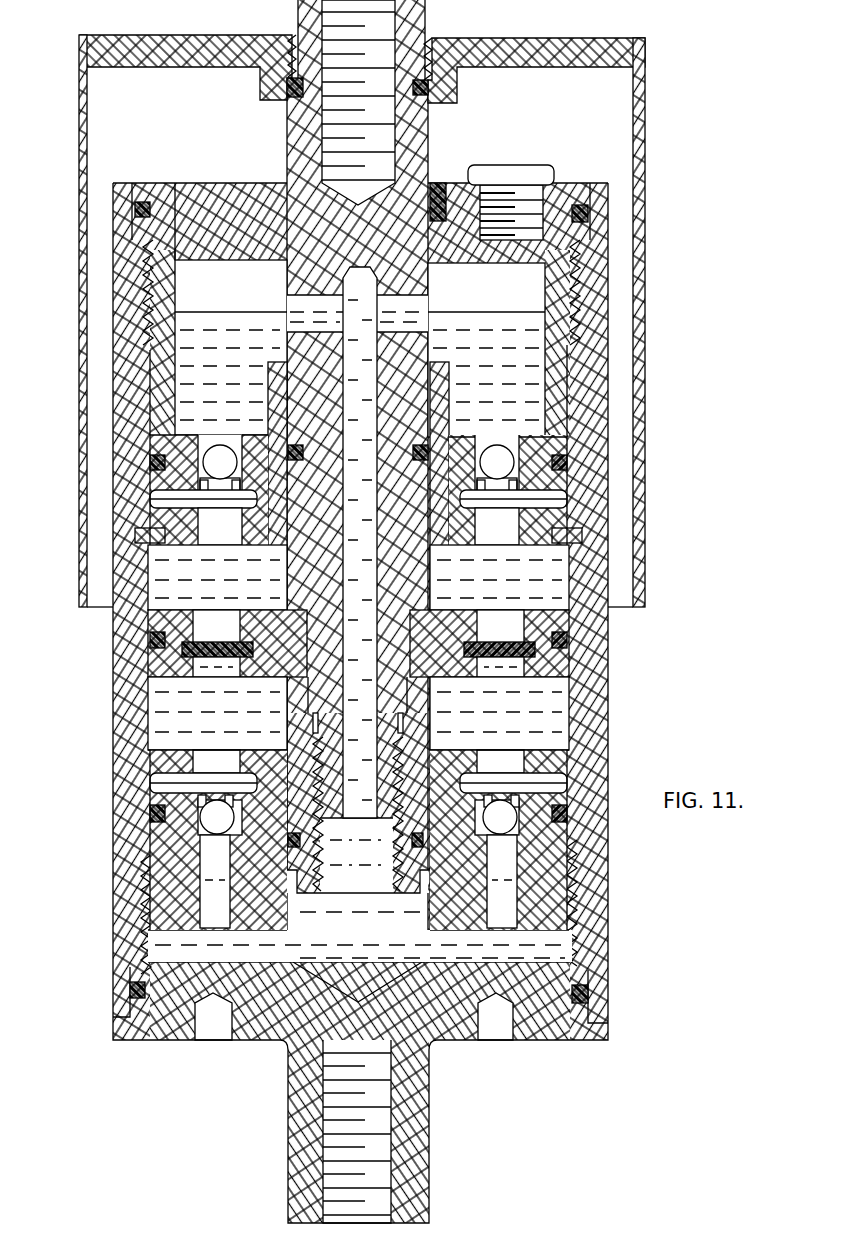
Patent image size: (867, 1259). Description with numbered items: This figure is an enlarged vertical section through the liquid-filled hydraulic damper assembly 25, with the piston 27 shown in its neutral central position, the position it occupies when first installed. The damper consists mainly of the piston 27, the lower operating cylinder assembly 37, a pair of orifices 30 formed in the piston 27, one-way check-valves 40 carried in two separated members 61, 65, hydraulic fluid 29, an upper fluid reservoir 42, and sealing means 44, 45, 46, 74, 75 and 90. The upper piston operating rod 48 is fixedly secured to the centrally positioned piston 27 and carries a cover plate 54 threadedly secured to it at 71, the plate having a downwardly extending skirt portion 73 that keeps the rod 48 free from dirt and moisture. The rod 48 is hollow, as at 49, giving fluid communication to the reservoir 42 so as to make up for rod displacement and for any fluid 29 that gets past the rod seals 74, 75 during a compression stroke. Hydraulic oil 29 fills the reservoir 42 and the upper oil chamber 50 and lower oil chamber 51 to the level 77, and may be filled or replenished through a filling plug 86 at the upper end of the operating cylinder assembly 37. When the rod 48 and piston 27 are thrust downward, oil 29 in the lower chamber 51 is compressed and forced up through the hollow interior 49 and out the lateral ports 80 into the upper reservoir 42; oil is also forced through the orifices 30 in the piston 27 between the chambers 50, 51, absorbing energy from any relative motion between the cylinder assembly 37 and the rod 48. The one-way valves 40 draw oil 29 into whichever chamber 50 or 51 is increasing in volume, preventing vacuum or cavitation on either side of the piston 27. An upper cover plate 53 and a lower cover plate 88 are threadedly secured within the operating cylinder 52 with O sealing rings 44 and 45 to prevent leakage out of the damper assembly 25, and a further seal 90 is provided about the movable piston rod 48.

The damper assembly 25 is at (608, 655).
The piston 27 is at (183, 612).
The hydraulic fluid 29 is at (512, 330).
The orifices 30 is at (222, 660).
The operating cylinder assembly 37 is at (120, 745).
The check-valves 40 is at (220, 452).
The upper fluid reservoir 42 is at (486, 350).
The O sealing ring 44 is at (147, 204).
The O sealing ring 45 is at (130, 990).
The sealing means 46 is at (428, 88).
The piston operating rod 48 is at (412, 285).
The hollow interior 49 is at (362, 316).
The upper oil chamber 50 is at (499, 577).
The lower oil chamber 51 is at (358, 713).
The operating cylinder 52 is at (118, 632).
The upper cover plate 53 is at (212, 182).
The cover plate 54 is at (195, 38).
The check-valve member 61 is at (252, 452).
The check-valve member 65 is at (165, 762).
The threaded connection 71 is at (290, 45).
The skirt portion 73 is at (80, 190).
The rod seal 74 is at (296, 462).
The rod seal 75 is at (318, 845).
The fluid level 77 is at (252, 312).
The lateral ports 80 is at (293, 322).
The filling plug 86 is at (530, 175).
The lower cover plate 88 is at (182, 1040).
The seal 90 is at (440, 186).